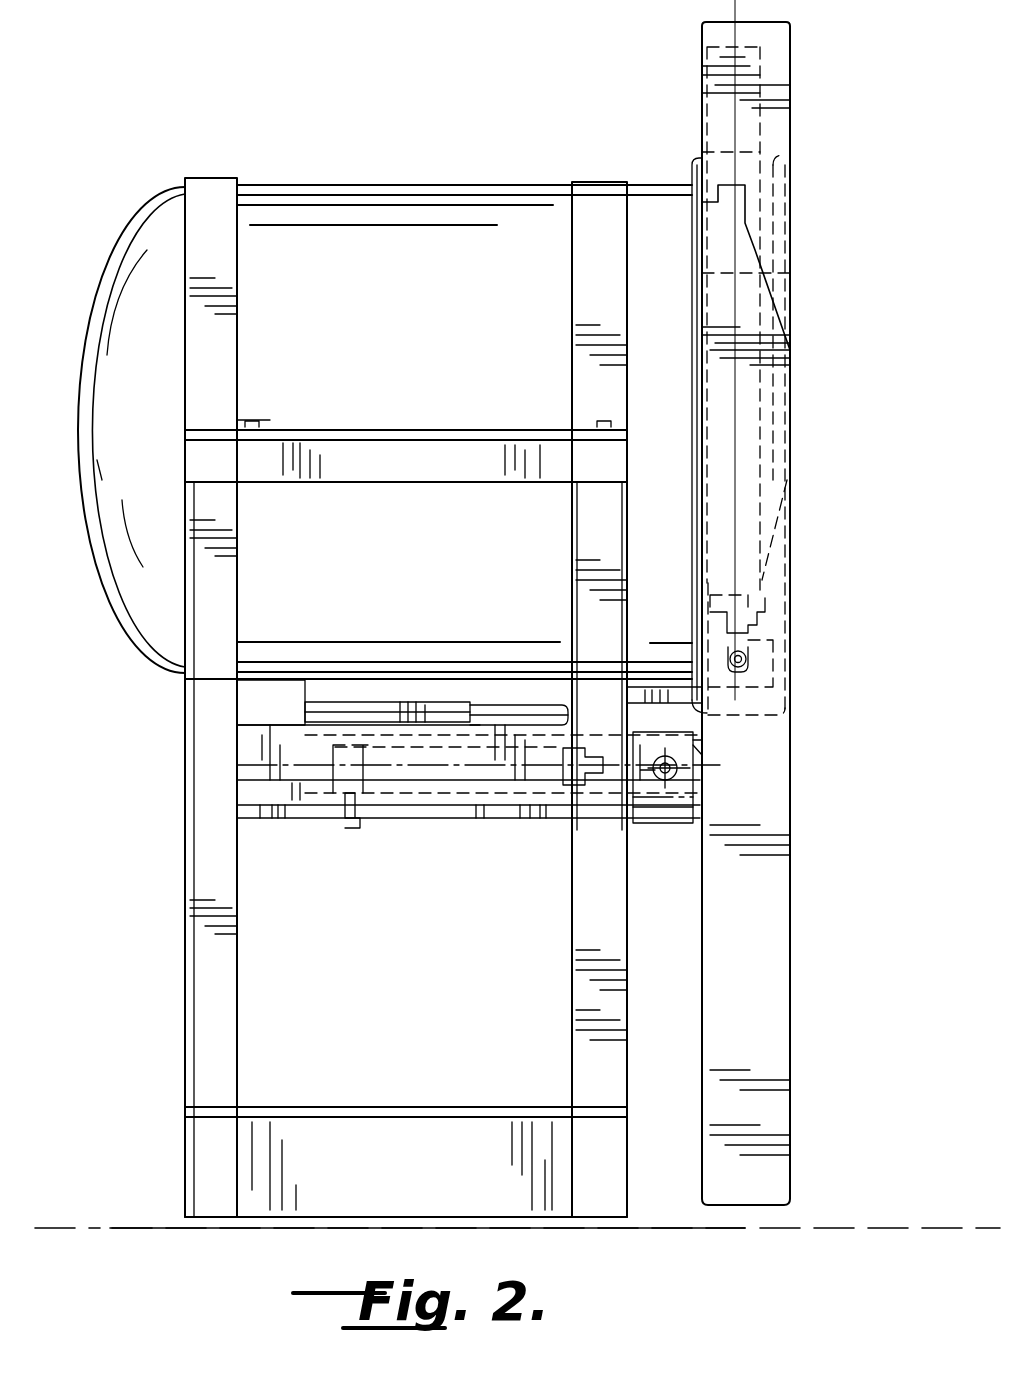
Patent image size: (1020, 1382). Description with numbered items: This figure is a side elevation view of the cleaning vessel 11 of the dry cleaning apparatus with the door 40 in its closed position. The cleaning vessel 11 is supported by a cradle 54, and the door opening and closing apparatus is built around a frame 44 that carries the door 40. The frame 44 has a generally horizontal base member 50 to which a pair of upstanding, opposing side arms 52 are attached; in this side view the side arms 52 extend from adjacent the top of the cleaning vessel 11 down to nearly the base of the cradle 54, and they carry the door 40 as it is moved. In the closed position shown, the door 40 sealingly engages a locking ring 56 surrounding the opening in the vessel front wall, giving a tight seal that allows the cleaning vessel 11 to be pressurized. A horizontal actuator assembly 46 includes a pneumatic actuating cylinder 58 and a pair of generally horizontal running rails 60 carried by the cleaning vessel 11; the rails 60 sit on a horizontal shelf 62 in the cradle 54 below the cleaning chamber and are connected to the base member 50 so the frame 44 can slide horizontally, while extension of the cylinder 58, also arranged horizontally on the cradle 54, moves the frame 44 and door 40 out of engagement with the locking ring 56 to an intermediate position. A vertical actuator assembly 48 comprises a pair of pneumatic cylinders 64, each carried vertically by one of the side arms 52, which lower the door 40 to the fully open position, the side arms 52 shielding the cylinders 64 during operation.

The cleaning vessel 11 is at (364, 183).
The door 40 is at (755, 250).
The frame 44 is at (800, 810).
The horizontal actuator assembly 46 is at (430, 792).
The vertical actuator assembly 48 is at (800, 125).
The base member 50 is at (355, 690).
The side arms 52 is at (770, 85).
The cradle 54 is at (215, 925).
The locking ring 56 is at (688, 163).
The pneumatic actuating cylinder 58 is at (452, 822).
The running rails 60 is at (505, 705).
The horizontal shelf 62 is at (547, 828).
The pneumatic cylinders 64 is at (765, 612).